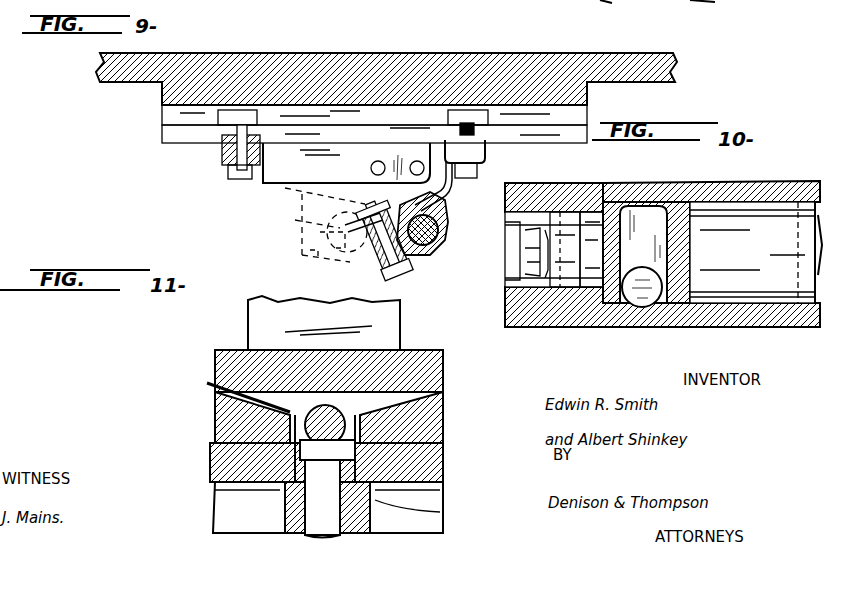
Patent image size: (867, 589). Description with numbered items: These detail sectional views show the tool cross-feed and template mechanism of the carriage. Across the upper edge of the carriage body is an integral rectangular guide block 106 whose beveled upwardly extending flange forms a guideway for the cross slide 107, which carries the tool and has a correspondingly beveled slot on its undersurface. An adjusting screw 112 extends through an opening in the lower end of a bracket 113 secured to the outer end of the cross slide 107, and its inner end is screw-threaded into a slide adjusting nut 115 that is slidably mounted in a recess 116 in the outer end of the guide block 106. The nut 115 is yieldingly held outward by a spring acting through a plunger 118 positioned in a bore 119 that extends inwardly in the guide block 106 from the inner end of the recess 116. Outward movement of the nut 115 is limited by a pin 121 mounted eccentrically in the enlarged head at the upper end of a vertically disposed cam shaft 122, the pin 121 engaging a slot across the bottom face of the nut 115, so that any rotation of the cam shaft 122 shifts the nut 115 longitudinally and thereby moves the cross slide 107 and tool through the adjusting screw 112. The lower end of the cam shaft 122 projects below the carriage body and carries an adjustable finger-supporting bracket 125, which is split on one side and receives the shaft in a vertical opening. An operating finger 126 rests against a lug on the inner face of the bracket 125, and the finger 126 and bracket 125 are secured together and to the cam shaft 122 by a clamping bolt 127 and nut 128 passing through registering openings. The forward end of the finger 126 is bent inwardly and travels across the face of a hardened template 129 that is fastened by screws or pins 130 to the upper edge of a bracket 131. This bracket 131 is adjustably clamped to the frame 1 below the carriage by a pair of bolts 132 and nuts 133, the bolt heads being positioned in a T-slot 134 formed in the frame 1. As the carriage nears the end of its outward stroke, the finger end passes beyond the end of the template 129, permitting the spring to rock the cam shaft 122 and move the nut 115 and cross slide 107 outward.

In FIG. 9, the frame 1 is at (676, 57).
In FIG. 9, the template 129 is at (407, 165).
In FIG. 9, the screws or pins 130 is at (378, 161).
In FIG. 9, the T-slot 134 is at (172, 120).
In FIG. 9, the bolts 132 is at (228, 152).
In FIG. 9, the nuts 133 is at (240, 180).
In FIG. 9, the bracket 131 is at (285, 184).
In FIG. 9, the operating finger 126 is at (348, 231).
In FIG. 9, the finger-supporting bracket 125 is at (442, 241).
In FIG. 9, the cam shaft 122 is at (439, 227).
In FIG. 11, the cam shaft 122 is at (318, 506).
In FIG. 9, the clamping bolt 127 is at (383, 257).
In FIG. 9, the nut 128 is at (412, 262).
In FIG. 10, the guide block 106 is at (601, 192).
In FIG. 11, the guide block 106 is at (446, 470).
In FIG. 10, the adjusting screw 112 is at (817, 240).
In FIG. 10, the bore 119 is at (522, 268).
In FIG. 10, the plunger 118 is at (528, 292).
In FIG. 10, the recess 116 is at (556, 300).
In FIG. 11, the recess 116 is at (446, 447).
In FIG. 10, the slide adjusting nut 115 is at (590, 300).
In FIG. 11, the slide adjusting nut 115 is at (215, 385).
In FIG. 10, the pin 121 is at (648, 290).
In FIG. 11, the pin 121 is at (308, 424).
In FIG. 10, the bracket 113 is at (735, 278).
In FIG. 11, the cross slide 107 is at (432, 367).